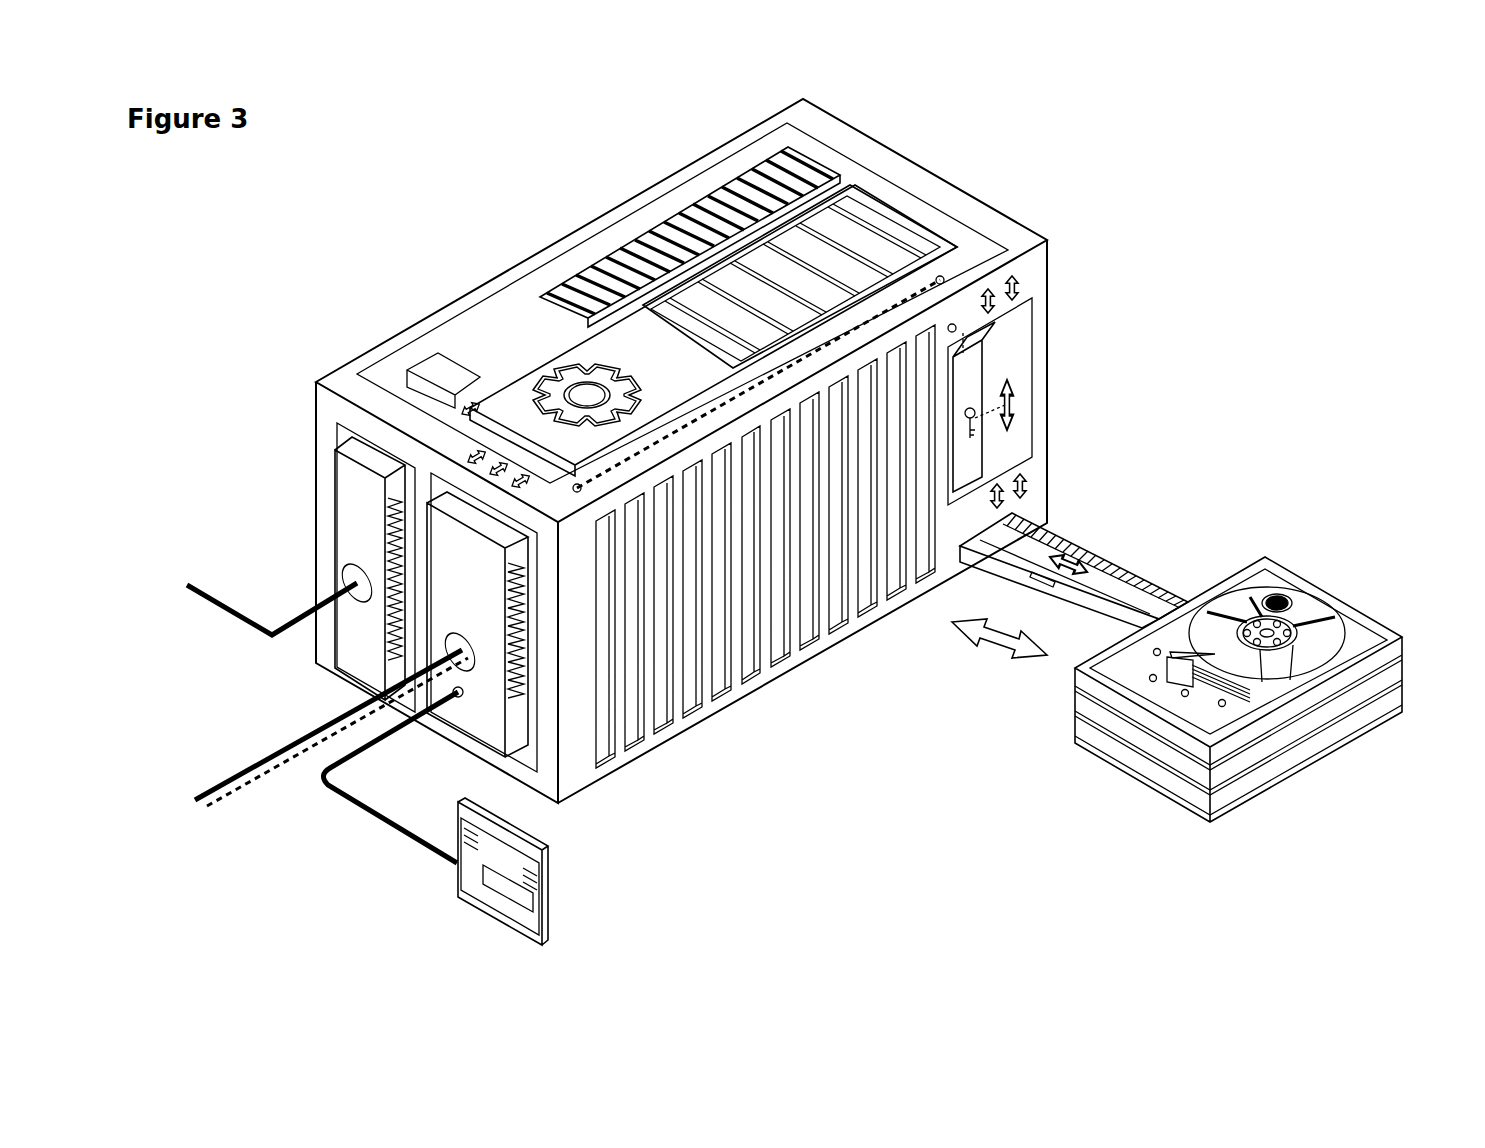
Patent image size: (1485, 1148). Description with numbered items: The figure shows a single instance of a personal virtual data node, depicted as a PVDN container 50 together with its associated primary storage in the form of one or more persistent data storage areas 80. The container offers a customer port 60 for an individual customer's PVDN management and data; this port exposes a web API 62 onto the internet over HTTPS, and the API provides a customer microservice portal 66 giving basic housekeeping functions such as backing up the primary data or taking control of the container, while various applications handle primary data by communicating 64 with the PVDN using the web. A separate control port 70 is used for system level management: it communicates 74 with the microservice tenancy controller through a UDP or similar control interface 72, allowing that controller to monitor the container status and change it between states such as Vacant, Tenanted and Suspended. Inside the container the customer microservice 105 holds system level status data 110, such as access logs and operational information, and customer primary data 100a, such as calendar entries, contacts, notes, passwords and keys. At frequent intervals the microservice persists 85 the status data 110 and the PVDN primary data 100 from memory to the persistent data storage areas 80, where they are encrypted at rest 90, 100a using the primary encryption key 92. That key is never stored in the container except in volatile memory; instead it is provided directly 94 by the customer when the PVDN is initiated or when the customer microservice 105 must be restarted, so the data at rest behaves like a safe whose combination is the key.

The PVDN container 50 is at (337, 382).
The customer port 60 is at (530, 758).
The web API 62 is at (483, 723).
The communicating 64 is at (263, 753).
The customer microservice portal 66 is at (470, 887).
The control port 70 is at (347, 432).
The control interface 72 is at (353, 520).
The communicates 74 is at (200, 580).
The persistent data storage areas 80 is at (1368, 633).
The persistent storage process 85 is at (990, 632).
The encrypted at rest 90 is at (1018, 405).
The primary encryption key 92 is at (973, 442).
The provided directly 94 is at (250, 783).
The PVDN primary data 100 is at (883, 217).
The customer primary data 100a is at (1100, 550).
The customer microservice 105 is at (633, 335).
The status data 110 is at (808, 170).